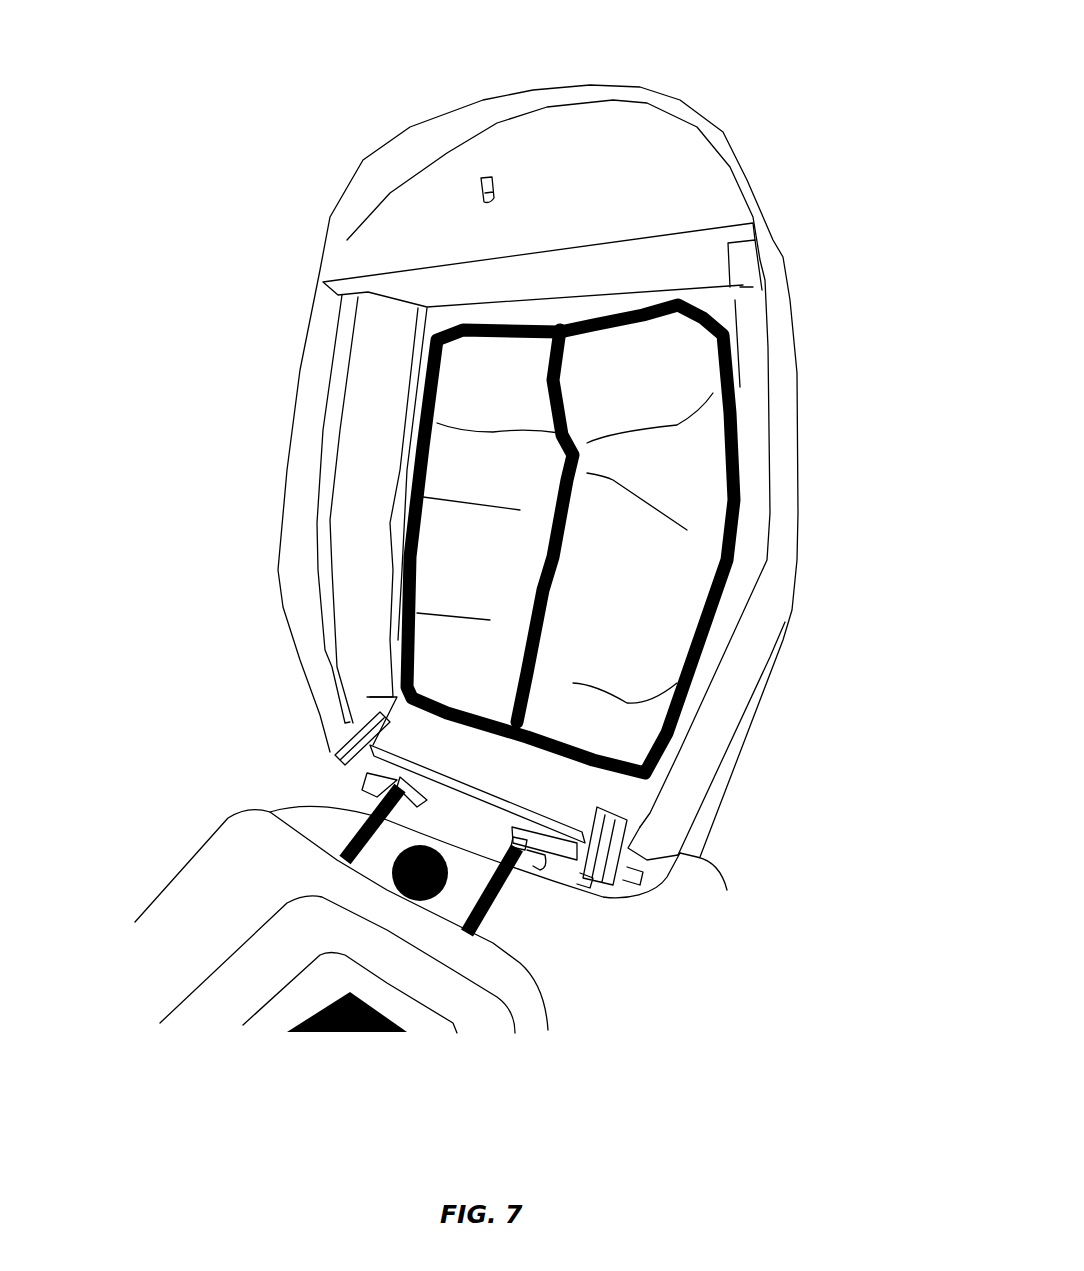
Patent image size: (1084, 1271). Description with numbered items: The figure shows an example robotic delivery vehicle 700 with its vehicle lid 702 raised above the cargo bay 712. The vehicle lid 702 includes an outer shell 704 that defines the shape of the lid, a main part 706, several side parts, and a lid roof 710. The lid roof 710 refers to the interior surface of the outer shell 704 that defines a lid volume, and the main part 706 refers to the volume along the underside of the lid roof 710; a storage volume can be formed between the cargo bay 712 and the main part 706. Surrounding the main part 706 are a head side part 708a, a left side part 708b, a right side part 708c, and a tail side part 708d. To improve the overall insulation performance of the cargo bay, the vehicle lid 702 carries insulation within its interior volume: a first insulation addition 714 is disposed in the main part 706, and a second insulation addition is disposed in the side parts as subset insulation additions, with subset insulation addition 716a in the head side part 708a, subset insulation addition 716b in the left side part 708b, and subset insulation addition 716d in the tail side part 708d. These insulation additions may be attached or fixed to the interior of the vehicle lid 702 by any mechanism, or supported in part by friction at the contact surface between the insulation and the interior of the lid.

The robotic delivery vehicle 700 is at (180, 82).
The vehicle lid 702 is at (687, 108).
The outer shell 704 is at (766, 257).
The main part 706 is at (681, 624).
The head side part 708a is at (348, 250).
The left side part 708b is at (299, 442).
The right side part 708c is at (762, 450).
The tail side part 708d is at (554, 816).
The lid roof 710 is at (485, 317).
The cargo bay 712 is at (202, 912).
The first insulation addition 714 is at (482, 700).
The subset insulation addition 716a is at (533, 133).
The subset insulation addition 716b is at (323, 593).
The subset insulation addition 716d is at (637, 797).